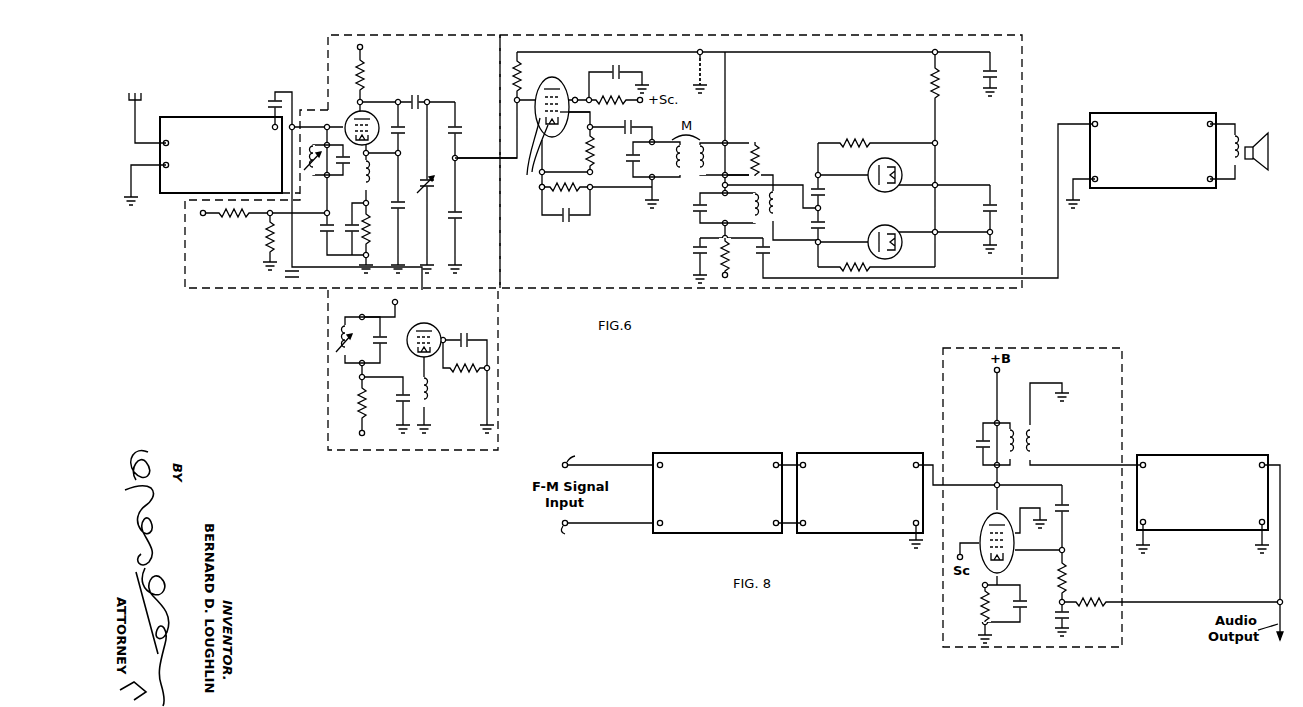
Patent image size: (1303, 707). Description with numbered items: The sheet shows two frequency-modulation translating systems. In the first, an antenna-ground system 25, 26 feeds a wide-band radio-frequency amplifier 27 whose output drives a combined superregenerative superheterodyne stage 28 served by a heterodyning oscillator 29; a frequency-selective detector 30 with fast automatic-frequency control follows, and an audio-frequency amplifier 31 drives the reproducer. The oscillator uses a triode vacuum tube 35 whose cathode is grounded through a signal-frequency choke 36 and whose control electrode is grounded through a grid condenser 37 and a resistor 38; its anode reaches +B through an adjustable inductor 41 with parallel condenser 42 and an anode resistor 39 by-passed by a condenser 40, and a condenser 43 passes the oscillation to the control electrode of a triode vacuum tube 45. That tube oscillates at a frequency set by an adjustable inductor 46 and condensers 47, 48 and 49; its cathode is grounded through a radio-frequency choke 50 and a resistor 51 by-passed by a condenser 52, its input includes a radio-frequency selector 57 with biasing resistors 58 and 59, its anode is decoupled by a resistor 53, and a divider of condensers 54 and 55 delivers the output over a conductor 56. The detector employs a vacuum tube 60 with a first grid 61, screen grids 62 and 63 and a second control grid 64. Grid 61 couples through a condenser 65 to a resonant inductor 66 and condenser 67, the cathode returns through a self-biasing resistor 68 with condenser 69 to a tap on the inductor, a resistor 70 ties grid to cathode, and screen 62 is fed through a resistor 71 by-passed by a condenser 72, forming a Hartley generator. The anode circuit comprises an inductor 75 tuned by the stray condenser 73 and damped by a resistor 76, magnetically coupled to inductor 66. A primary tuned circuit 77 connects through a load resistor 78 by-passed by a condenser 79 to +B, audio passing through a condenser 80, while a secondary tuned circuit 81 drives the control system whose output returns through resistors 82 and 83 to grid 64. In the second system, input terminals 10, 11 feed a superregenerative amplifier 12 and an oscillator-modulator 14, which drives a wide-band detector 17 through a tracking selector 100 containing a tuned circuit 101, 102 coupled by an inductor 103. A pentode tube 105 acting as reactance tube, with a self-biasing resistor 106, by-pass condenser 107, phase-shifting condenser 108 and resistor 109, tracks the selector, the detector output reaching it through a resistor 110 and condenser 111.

In FIG. 8, the input terminal 10 is at (577, 457).
In FIG. 8, the input terminal 11 is at (573, 533).
In FIG. 8, the superregenerative amplifier 12 is at (726, 431).
In FIG. 8, the oscillator-modulator 14 is at (866, 450).
In FIG. 8, the detector 17 is at (1200, 450).
In FIG. 6, the antenna 25 is at (147, 118).
In FIG. 6, the ground 26 is at (135, 193).
In FIG. 6, the wide-band radio-frequency amplifier 27 is at (238, 110).
In FIG. 6, the combined superregenerative superheterodyne stage 28 is at (387, 35).
In FIG. 6, the heterodyning oscillator 29 is at (327, 398).
In FIG. 6, the frequency-selective detector 30 is at (636, 35).
In FIG. 6, the audio-frequency amplifier 31 is at (1155, 112).
In FIG. 6, the triode vacuum tube 35 is at (426, 326).
In FIG. 6, the signal-frequency choke 36 is at (430, 408).
In FIG. 6, the grid condenser 37 is at (462, 334).
In FIG. 6, the resistor 38 is at (464, 379).
In FIG. 6, the anode resistor 39 is at (358, 402).
In FIG. 6, the condenser 40 is at (392, 393).
In FIG. 6, the inductor 41 is at (358, 340).
In FIG. 6, the condenser 42 is at (384, 341).
In FIG. 6, the condenser 43 is at (294, 275).
In FIG. 6, the triode vacuum tube 45 is at (355, 123).
In FIG. 6, the inductor 46 is at (418, 179).
In FIG. 6, the condenser 47 is at (415, 94).
In FIG. 6, the condenser 48 is at (406, 130).
In FIG. 6, the condenser 49 is at (413, 212).
In FIG. 6, the radio-frequency choke 50 is at (370, 188).
In FIG. 6, the resistor 51 is at (370, 224).
In FIG. 6, the condenser 52 is at (349, 241).
In FIG. 6, the anode decoupling resistor 53 is at (364, 70).
In FIG. 6, the condenser 54 is at (462, 132).
In FIG. 6, the condenser 55 is at (462, 216).
In FIG. 6, the conductor 56 is at (489, 158).
In FIG. 6, the radio-frequency selector 57 is at (310, 146).
In FIG. 6, the resistor 58 is at (238, 217).
In FIG. 6, the resistor 59 is at (264, 247).
In FIG. 6, the vacuum tube 60 is at (552, 98).
In FIG. 6, the first grid 61 is at (575, 126).
In FIG. 6, the screen grid 62 is at (530, 187).
In FIG. 6, the screen grid 63 is at (575, 89).
In FIG. 6, the second control grid 64 is at (526, 149).
In FIG. 6, the condenser 65 is at (632, 123).
In FIG. 6, the inductor 66 is at (674, 168).
In FIG. 6, the condenser 67 is at (592, 178).
In FIG. 6, the self-biasing resistor 68 is at (579, 196).
In FIG. 6, the condenser 69 is at (562, 219).
In FIG. 6, the resistor 70 is at (592, 139).
In FIG. 6, the resistor 71 is at (612, 96).
In FIG. 6, the condenser 72 is at (629, 66).
In FIG. 6, the condenser 73 is at (708, 82).
In FIG. 6, the inductor 75 is at (726, 159).
In FIG. 6, the resistor 76 is at (757, 152).
In FIG. 6, the primary tuned circuit 77 is at (736, 215).
In FIG. 6, the load resistor 78 is at (730, 254).
In FIG. 6, the condenser 79 is at (693, 254).
In FIG. 6, the condenser 80 is at (770, 250).
In FIG. 6, the secondary tuned circuit 81 is at (799, 231).
In FIG. 6, the resistor 82 is at (932, 87).
In FIG. 6, the resistor 83 is at (527, 75).
In FIG. 8, the tracking selector 100 is at (942, 378).
In FIG. 8, the tuned circuit condenser 101 is at (976, 442).
In FIG. 8, the tuned circuit inductor 102 is at (1012, 430).
In FIG. 8, the inductor 103 is at (1033, 438).
In FIG. 8, the pentode tube 105 is at (980, 513).
In FIG. 8, the self-biasing resistor 106 is at (980, 600).
In FIG. 8, the by-pass condenser 107 is at (1030, 606).
In FIG. 8, the condenser 108 is at (1068, 510).
In FIG. 8, the resistor 109 is at (1067, 563).
In FIG. 8, the resistor 110 is at (1082, 596).
In FIG. 8, the condenser 111 is at (1073, 620).